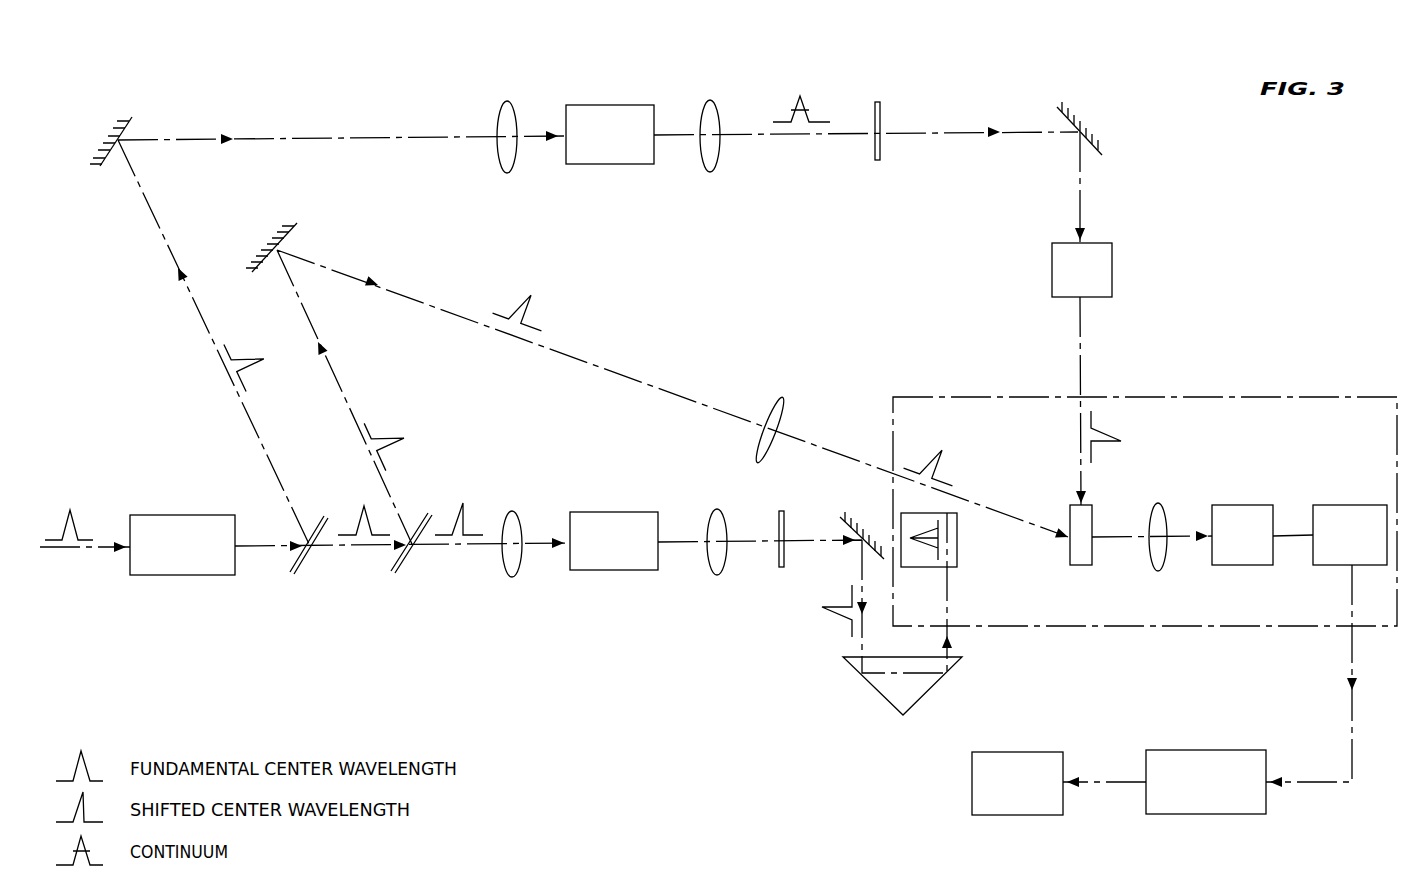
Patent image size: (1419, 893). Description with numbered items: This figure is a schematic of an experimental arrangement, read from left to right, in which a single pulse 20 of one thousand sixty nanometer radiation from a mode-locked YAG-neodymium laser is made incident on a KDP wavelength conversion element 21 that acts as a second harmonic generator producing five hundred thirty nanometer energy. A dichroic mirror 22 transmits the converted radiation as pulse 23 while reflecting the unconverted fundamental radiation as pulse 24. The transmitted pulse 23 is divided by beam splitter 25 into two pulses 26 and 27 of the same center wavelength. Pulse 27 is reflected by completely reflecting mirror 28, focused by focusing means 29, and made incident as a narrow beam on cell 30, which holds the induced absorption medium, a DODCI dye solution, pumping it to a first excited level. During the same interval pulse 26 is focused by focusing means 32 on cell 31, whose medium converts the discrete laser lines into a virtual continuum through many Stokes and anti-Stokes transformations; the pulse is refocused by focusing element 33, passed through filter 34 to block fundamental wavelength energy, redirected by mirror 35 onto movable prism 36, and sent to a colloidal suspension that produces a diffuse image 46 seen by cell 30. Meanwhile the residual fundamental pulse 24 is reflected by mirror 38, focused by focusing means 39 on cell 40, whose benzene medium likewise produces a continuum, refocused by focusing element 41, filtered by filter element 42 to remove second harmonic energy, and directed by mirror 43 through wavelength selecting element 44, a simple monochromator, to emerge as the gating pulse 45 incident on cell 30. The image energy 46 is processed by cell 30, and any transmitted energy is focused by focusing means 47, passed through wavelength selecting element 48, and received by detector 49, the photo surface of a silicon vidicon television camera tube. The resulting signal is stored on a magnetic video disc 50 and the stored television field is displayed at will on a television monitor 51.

The pulse 20 is at (75, 522).
The wavelength conversion element 21 is at (152, 575).
The mirror 22 is at (300, 575).
The pulse 23 is at (358, 525).
The pulse 24 is at (812, 100).
The beam splitter 25 is at (418, 558).
The pulse 26 is at (459, 504).
The pulse 27 is at (398, 442).
The mirror 28 is at (262, 256).
The focusing means 29 is at (768, 396).
The cell 30 is at (1068, 515).
The cell 31 is at (614, 570).
The focusing means 32 is at (512, 511).
The focusing element 33 is at (708, 510).
The filter 34 is at (778, 555).
The mirror 35 is at (860, 520).
The movable prism 36 is at (860, 680).
The mirror 38 is at (106, 148).
The focusing means 39 is at (497, 148).
The cell 40 is at (608, 164).
The focusing element 41 is at (720, 150).
The filter element 42 is at (882, 148).
The mirror 43 is at (1085, 122).
The wavelength selecting element 44 is at (1107, 273).
The pulse 45 is at (1112, 428).
The diffuse image 46 is at (926, 556).
The focusing means 47 is at (1165, 555).
The wavelength selecting element 48 is at (1242, 510).
The detector 49 is at (1355, 512).
The magnetic video disc 50 is at (1220, 750).
The television monitor 51 is at (1030, 752).